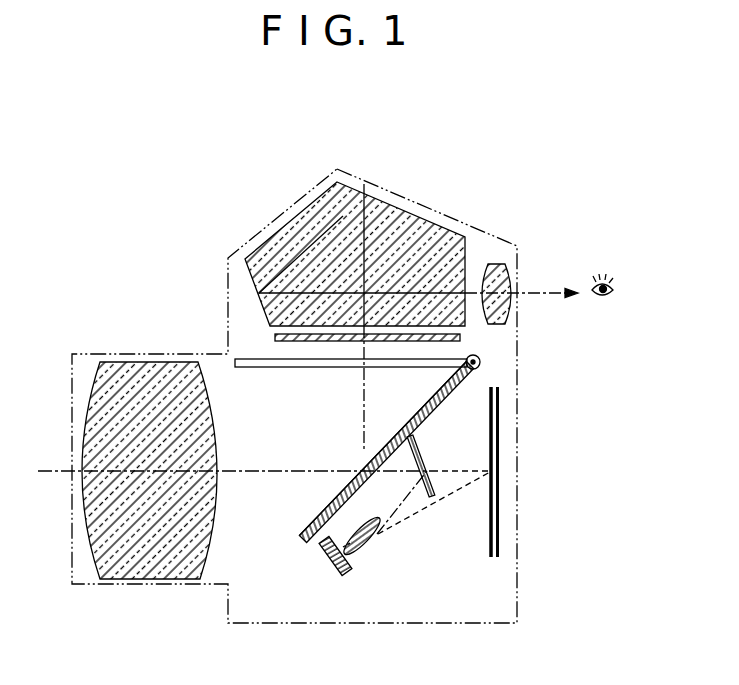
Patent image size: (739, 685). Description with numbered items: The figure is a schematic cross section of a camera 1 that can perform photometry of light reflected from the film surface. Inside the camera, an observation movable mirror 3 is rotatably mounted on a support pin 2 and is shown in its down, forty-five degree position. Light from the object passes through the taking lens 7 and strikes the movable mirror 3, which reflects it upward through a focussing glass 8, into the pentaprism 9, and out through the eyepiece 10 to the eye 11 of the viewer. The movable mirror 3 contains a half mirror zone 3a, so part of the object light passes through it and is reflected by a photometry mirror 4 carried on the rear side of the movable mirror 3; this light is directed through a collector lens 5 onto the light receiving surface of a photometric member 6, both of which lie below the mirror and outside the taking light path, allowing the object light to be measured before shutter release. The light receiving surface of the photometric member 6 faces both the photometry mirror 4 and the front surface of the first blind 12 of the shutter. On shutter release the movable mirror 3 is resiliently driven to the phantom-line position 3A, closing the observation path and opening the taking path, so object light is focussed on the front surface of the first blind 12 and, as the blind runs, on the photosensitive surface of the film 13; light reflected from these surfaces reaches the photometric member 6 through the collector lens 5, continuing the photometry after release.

The camera 1 is at (433, 207).
The support pin 2 is at (481, 361).
The observation movable mirror 3 is at (423, 414).
The half mirror zone 3a is at (380, 457).
The raised position of movable mirror 3A is at (277, 370).
The photometry mirror 4 is at (423, 465).
The collector lens 5 is at (380, 551).
The photometric member 6 is at (352, 577).
The taking lens 7 is at (204, 447).
The focussing glass 8 is at (278, 338).
The pentaprism 9 is at (300, 221).
The eyepiece 10 is at (505, 275).
The eye 11 is at (607, 300).
The first blind of shutter 12 is at (489, 530).
The film 13 is at (497, 560).